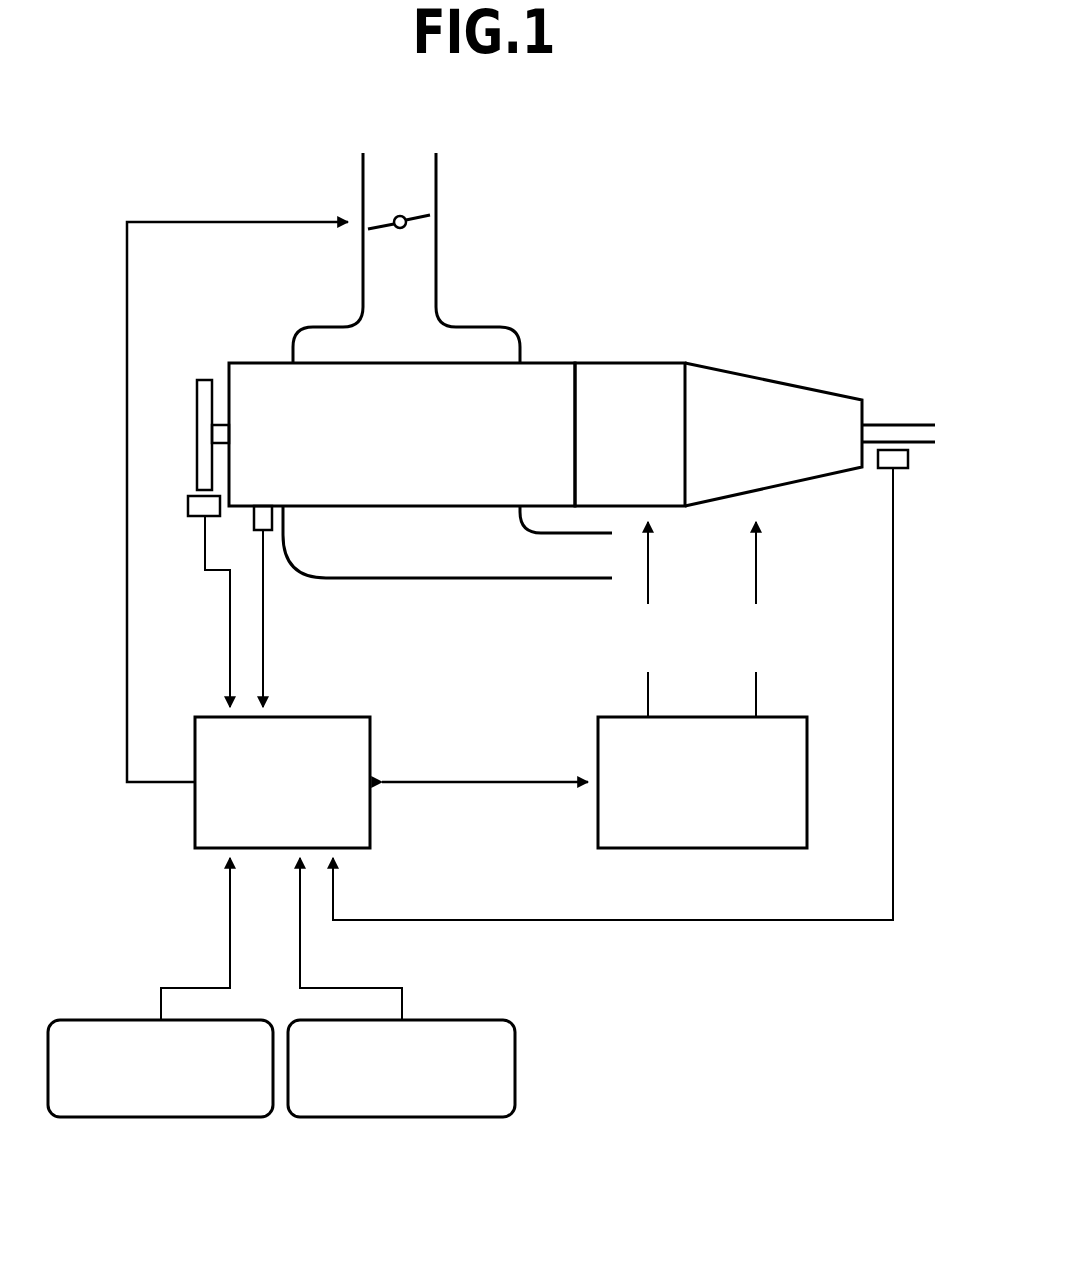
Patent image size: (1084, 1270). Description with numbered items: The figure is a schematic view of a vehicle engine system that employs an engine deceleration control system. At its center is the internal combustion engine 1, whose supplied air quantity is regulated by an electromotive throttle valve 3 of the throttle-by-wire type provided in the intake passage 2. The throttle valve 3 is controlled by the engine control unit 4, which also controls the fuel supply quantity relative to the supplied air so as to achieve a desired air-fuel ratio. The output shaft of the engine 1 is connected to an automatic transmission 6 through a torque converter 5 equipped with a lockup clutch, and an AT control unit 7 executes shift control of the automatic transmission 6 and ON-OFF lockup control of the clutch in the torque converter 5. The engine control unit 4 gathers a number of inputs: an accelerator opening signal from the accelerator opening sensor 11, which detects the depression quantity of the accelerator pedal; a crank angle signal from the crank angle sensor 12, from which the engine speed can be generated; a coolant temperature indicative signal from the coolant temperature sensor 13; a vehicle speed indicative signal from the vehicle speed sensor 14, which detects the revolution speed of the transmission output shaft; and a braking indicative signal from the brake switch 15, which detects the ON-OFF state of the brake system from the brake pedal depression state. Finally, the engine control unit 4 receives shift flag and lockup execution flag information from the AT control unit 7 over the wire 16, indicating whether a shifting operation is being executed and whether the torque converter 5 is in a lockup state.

The internal combustion engine 1 is at (240, 362).
The intake passage 2 is at (437, 188).
The electromotive throttle valve 3 is at (437, 224).
The engine control unit 4 is at (348, 716).
The torque converter 5 is at (622, 362).
The automatic transmission 6 is at (757, 374).
The AT control unit 7 is at (598, 742).
The accelerator opening sensor 11 is at (92, 1020).
The crank angle sensor 12 is at (198, 518).
The coolant temperature sensor 13 is at (272, 528).
The vehicle speed sensor 14 is at (886, 470).
The brake switch 15 is at (478, 1020).
The wire 16 is at (466, 780).